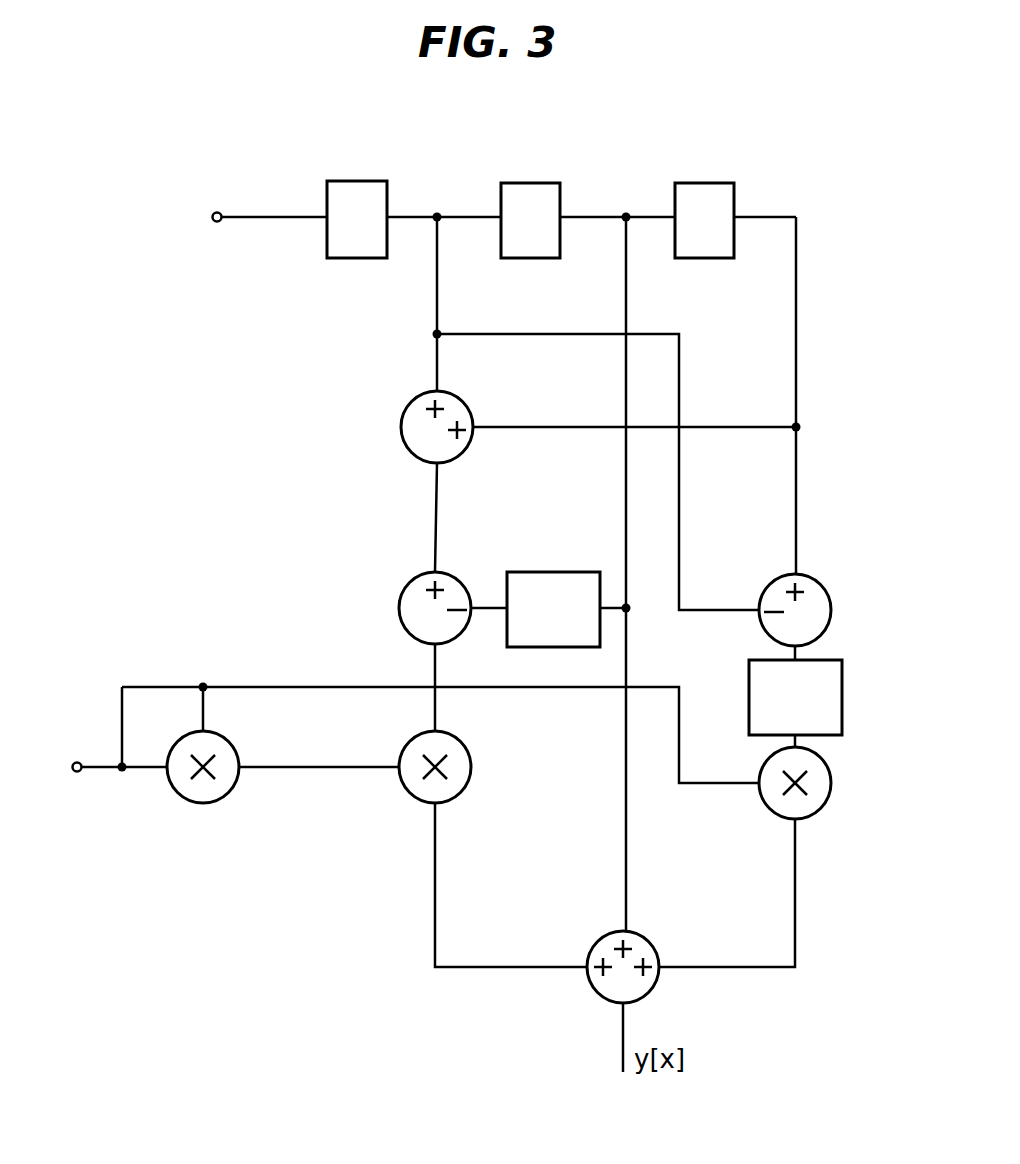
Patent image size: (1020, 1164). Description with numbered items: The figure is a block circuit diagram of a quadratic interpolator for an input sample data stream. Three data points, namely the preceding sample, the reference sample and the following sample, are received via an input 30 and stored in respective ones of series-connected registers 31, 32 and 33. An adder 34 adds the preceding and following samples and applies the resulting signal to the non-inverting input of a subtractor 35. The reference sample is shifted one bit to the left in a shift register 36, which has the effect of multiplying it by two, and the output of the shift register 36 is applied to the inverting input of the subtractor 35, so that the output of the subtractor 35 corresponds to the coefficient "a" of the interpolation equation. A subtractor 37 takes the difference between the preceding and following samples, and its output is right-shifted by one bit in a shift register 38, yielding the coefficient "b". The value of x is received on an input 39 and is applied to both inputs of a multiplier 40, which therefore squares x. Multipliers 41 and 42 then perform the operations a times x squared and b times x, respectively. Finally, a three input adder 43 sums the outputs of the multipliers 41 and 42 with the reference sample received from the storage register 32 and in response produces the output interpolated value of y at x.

The input 30 is at (215, 211).
The register 31 is at (343, 181).
The register 32 is at (516, 183).
The register 33 is at (689, 183).
The adder 34 is at (412, 457).
The subtractor 35 is at (412, 638).
The shift register 36 is at (537, 572).
The subtractor 37 is at (821, 582).
The shift register 38 is at (795, 697).
The input 39 is at (76, 762).
The multiplier 40 is at (202, 803).
The multiplier 41 is at (461, 794).
The multiplier 42 is at (820, 811).
The three input adder 43 is at (650, 995).